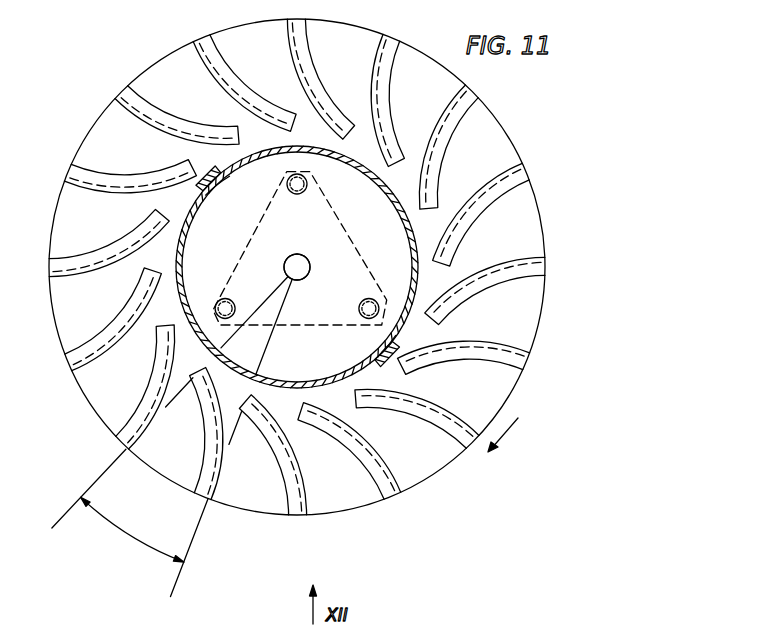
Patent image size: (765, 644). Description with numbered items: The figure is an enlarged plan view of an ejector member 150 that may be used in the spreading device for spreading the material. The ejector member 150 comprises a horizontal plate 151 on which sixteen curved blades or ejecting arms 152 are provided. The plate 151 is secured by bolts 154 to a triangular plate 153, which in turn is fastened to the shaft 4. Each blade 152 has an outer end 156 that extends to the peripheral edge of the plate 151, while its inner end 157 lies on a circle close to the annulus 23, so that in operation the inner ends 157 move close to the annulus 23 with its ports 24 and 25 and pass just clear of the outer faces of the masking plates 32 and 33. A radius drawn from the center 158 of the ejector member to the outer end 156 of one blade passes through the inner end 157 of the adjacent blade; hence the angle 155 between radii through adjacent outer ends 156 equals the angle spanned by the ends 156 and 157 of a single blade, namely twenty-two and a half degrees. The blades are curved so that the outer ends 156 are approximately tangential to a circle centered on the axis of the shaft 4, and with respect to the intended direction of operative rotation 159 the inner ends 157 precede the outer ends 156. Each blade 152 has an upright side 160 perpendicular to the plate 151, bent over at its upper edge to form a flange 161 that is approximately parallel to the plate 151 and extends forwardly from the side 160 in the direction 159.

The ejector member 150 is at (109, 106).
The horizontal plate 151 is at (509, 158).
The blades 152 is at (578, 343).
The triangular plate 153 is at (334, 316).
The bolts 154 is at (227, 298).
The angle 155 is at (138, 549).
The outer ends 156 is at (230, 437).
The inner ends 157 is at (170, 403).
The center 158 is at (300, 255).
The direction of operative rotation 159 is at (521, 413).
The upright side 160 is at (393, 487).
The flange 161 is at (367, 471).
The annulus 23 is at (396, 209).
The port 24 is at (220, 189).
The port 25 is at (385, 346).
The masking plate 32 is at (200, 189).
The masking plate 33 is at (398, 369).
The shaft 4 is at (310, 270).